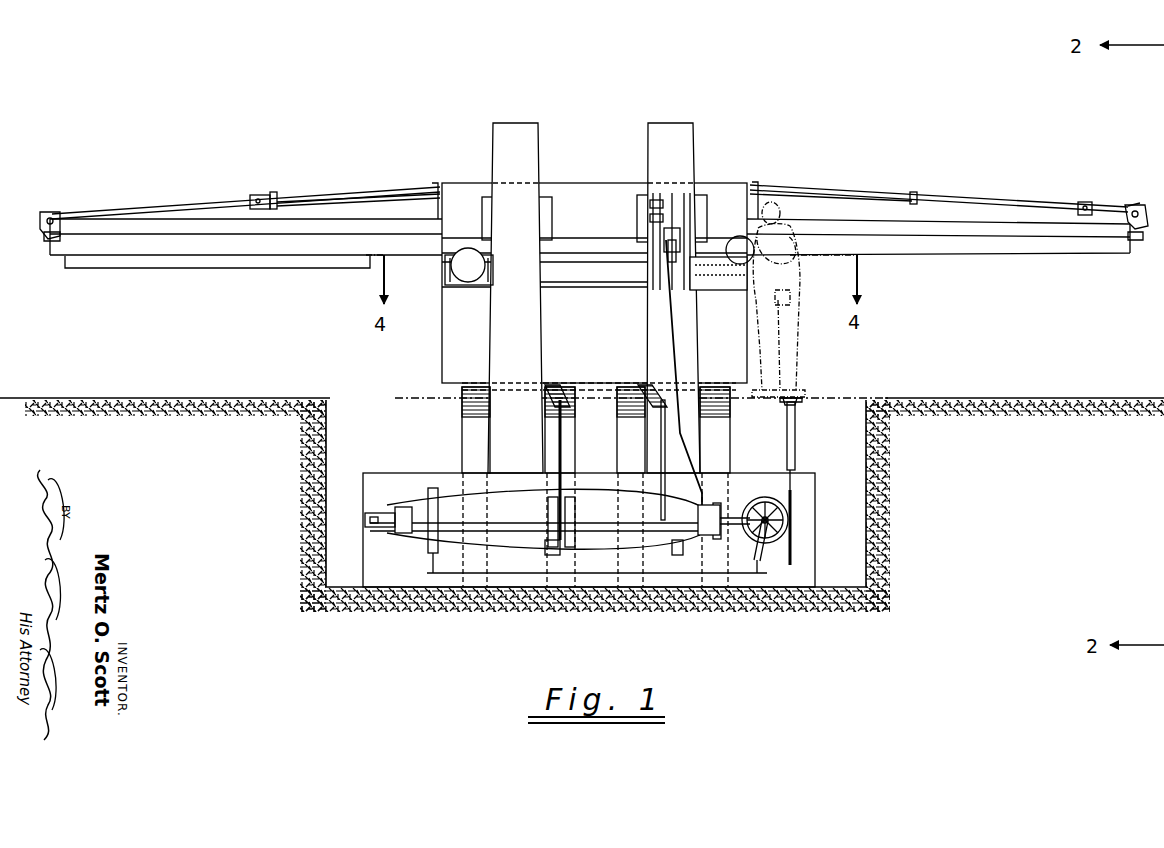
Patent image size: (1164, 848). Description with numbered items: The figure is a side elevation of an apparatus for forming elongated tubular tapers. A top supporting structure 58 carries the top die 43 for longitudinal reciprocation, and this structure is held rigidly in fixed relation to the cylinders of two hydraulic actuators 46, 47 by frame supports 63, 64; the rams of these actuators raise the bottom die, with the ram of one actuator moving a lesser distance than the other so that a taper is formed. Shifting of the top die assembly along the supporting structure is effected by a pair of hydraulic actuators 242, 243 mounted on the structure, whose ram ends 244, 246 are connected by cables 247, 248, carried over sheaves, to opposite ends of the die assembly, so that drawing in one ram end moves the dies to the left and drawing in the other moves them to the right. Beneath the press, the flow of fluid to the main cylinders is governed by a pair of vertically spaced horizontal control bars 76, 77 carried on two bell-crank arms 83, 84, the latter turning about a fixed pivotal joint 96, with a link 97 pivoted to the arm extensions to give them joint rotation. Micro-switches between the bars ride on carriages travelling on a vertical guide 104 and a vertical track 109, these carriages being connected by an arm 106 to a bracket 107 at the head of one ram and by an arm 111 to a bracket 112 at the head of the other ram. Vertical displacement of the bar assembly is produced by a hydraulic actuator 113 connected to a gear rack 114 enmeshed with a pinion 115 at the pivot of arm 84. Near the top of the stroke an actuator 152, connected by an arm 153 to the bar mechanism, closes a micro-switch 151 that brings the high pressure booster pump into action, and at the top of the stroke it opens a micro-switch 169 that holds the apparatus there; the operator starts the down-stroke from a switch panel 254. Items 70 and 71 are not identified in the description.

The die 43 is at (100, 270).
The hydraulic actuator 46 is at (455, 443).
The hydraulic actuator 47 is at (735, 448).
The top supporting structure 58 is at (578, 183).
The frame support 63 is at (518, 127).
The frame support 64 is at (668, 127).
The roller 70 is at (466, 276).
The hand wheel 71 is at (727, 250).
The control bar 76 is at (522, 510).
The control bar 77 is at (525, 531).
The arm 83 is at (416, 508).
The arm 84 is at (760, 516).
The fixed pivotal joint 96 is at (767, 512).
The link 97 is at (500, 588).
The vertical guide 104 is at (562, 554).
The arm 106 is at (563, 460).
The bracket 107 is at (558, 385).
The vertical track 109 is at (670, 548).
The arm 111 is at (658, 438).
The bracket 112 is at (648, 385).
The hydraulic actuator 113 is at (797, 428).
The gear rack 114 is at (794, 498).
The pinion 115 is at (772, 545).
The micro-switch 151 is at (650, 218).
The actuator 152 is at (664, 244).
The arm 153 is at (672, 318).
The micro-switch 169 is at (650, 206).
The hydraulic actuator 242 is at (347, 193).
The hydraulic actuator 243 is at (821, 190).
The ram end 244 is at (256, 193).
The ram end 246 is at (1085, 201).
The cable 247 is at (143, 207).
The cable 248 is at (1108, 206).
The switch panel 254 is at (704, 272).